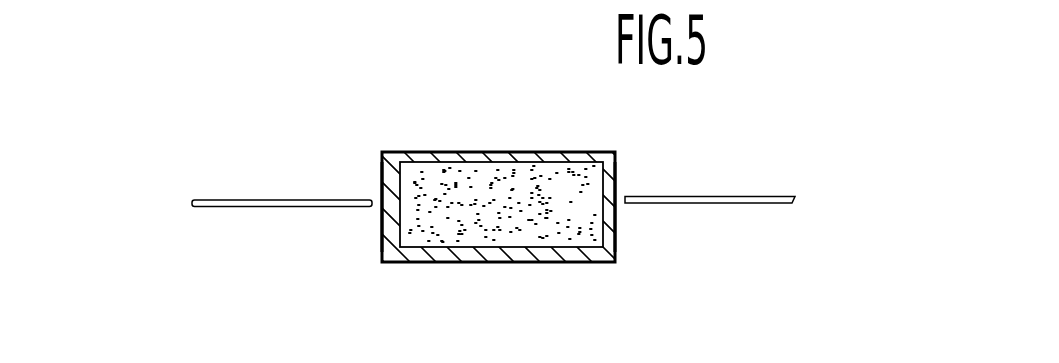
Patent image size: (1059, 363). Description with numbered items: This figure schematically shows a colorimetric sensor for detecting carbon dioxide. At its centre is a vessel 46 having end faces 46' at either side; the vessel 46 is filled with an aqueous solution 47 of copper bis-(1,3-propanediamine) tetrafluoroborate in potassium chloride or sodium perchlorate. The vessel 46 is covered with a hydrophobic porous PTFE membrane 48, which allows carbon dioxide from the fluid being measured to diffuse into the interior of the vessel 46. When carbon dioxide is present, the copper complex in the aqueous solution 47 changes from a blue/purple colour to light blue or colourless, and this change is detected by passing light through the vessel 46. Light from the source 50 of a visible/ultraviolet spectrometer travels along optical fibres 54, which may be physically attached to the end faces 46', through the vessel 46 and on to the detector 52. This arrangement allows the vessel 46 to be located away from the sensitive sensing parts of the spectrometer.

The vessel 46 is at (498, 238).
The end faces 46' is at (509, 224).
The aqueous solution 47 is at (458, 175).
The hydrophobic porous PTFE membrane 48 is at (573, 161).
The source 50 is at (807, 199).
The detector 52 is at (173, 205).
The optical fibres 54 is at (308, 200).